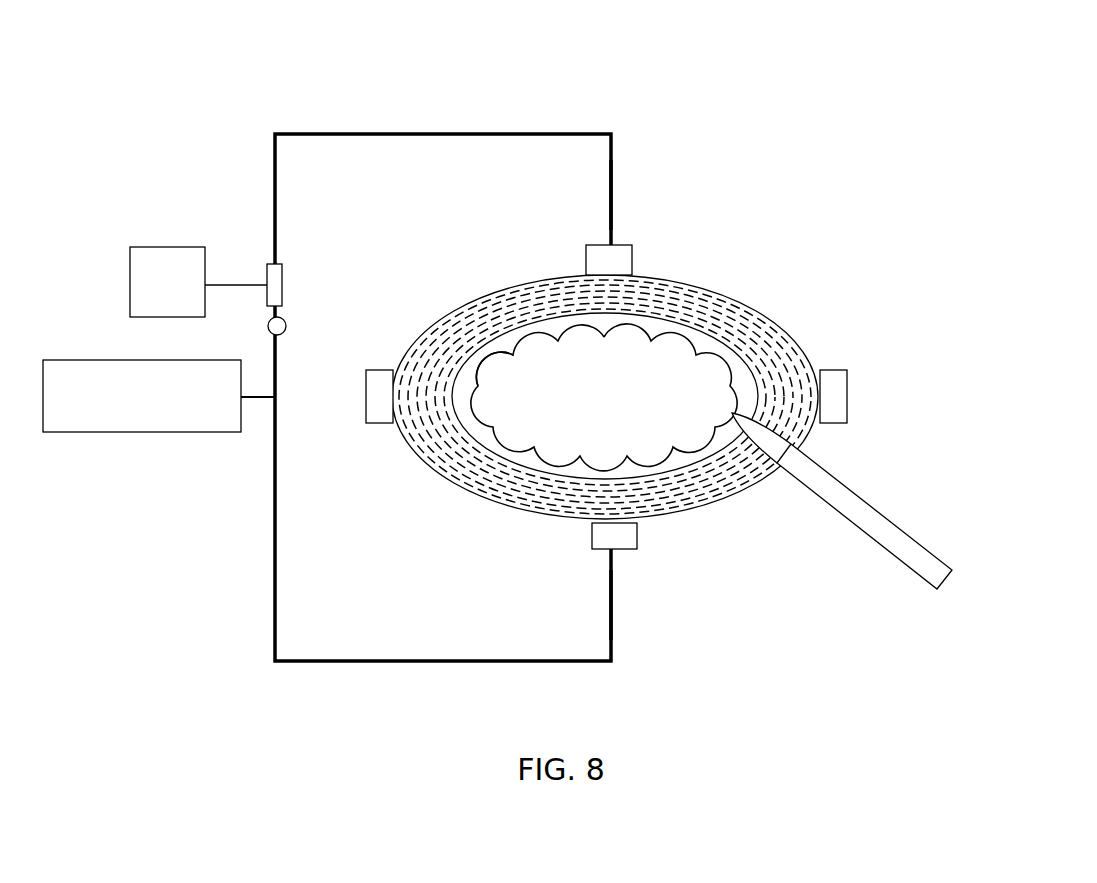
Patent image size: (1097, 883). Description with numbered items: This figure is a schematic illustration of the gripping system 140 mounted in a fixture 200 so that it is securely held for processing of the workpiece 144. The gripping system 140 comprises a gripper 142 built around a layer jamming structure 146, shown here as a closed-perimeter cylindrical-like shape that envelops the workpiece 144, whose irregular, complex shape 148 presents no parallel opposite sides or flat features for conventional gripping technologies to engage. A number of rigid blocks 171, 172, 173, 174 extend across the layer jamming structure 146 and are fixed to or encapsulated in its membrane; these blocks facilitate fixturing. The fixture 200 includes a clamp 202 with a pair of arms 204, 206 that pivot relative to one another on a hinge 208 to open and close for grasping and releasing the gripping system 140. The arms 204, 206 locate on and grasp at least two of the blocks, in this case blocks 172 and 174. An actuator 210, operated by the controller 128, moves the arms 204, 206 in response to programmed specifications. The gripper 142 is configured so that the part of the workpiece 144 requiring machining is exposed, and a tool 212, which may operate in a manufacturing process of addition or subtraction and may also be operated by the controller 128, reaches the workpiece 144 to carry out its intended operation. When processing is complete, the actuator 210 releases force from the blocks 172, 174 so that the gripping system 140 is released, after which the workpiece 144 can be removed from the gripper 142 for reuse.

The controller 128 is at (140, 295).
The gripping system 140 is at (762, 228).
The gripper 142 is at (789, 334).
The workpiece 144 is at (580, 406).
The layer jamming structure 146 is at (520, 289).
The irregular, complex shape 148 is at (485, 367).
The block 171 is at (382, 369).
The block 172 is at (625, 245).
The block 173 is at (848, 383).
The block 174 is at (643, 531).
The fixture 200 is at (114, 412).
The clamp 202 is at (347, 133).
The arm 204 is at (610, 210).
The arm 206 is at (613, 608).
The hinge 208 is at (284, 334).
The actuator 210 is at (267, 276).
The tool 212 is at (892, 538).